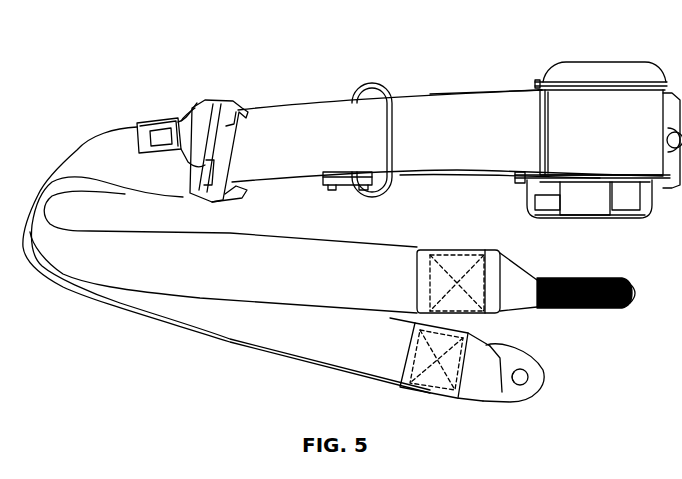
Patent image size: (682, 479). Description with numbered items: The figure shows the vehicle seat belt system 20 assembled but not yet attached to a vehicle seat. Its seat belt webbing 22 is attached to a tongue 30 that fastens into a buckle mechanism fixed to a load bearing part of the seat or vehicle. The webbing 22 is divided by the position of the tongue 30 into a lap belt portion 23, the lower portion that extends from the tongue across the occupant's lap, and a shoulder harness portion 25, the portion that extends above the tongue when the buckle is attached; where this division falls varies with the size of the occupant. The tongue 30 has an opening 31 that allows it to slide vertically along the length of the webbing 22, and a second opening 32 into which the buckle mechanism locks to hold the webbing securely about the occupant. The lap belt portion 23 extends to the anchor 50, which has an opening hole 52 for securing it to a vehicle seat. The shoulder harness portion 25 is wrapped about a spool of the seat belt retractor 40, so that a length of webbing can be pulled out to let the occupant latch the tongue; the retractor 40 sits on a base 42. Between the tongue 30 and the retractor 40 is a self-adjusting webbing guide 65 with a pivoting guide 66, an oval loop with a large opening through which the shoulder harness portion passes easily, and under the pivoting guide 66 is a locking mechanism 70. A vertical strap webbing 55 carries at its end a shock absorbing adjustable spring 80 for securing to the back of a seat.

The vehicle seat belt system 20 is at (335, 64).
The seat belt webbing 22 is at (448, 97).
The lap belt portion 23 is at (80, 142).
The shoulder harness portion 25 is at (287, 102).
The tongue 30 is at (183, 127).
The opening 31 is at (221, 98).
The opening 32 is at (152, 132).
The seat belt retractor 40 is at (618, 57).
The retractor base 42 is at (595, 218).
The anchor 50 is at (520, 348).
The opening hole 52 is at (528, 380).
The vertical strap webbing 55 is at (382, 243).
The self-adjusting webbing guide 65 is at (384, 81).
The pivoting guide 66 is at (367, 83).
The locking mechanism 70 is at (343, 185).
The shock absorbing adjustable spring 80 is at (573, 277).